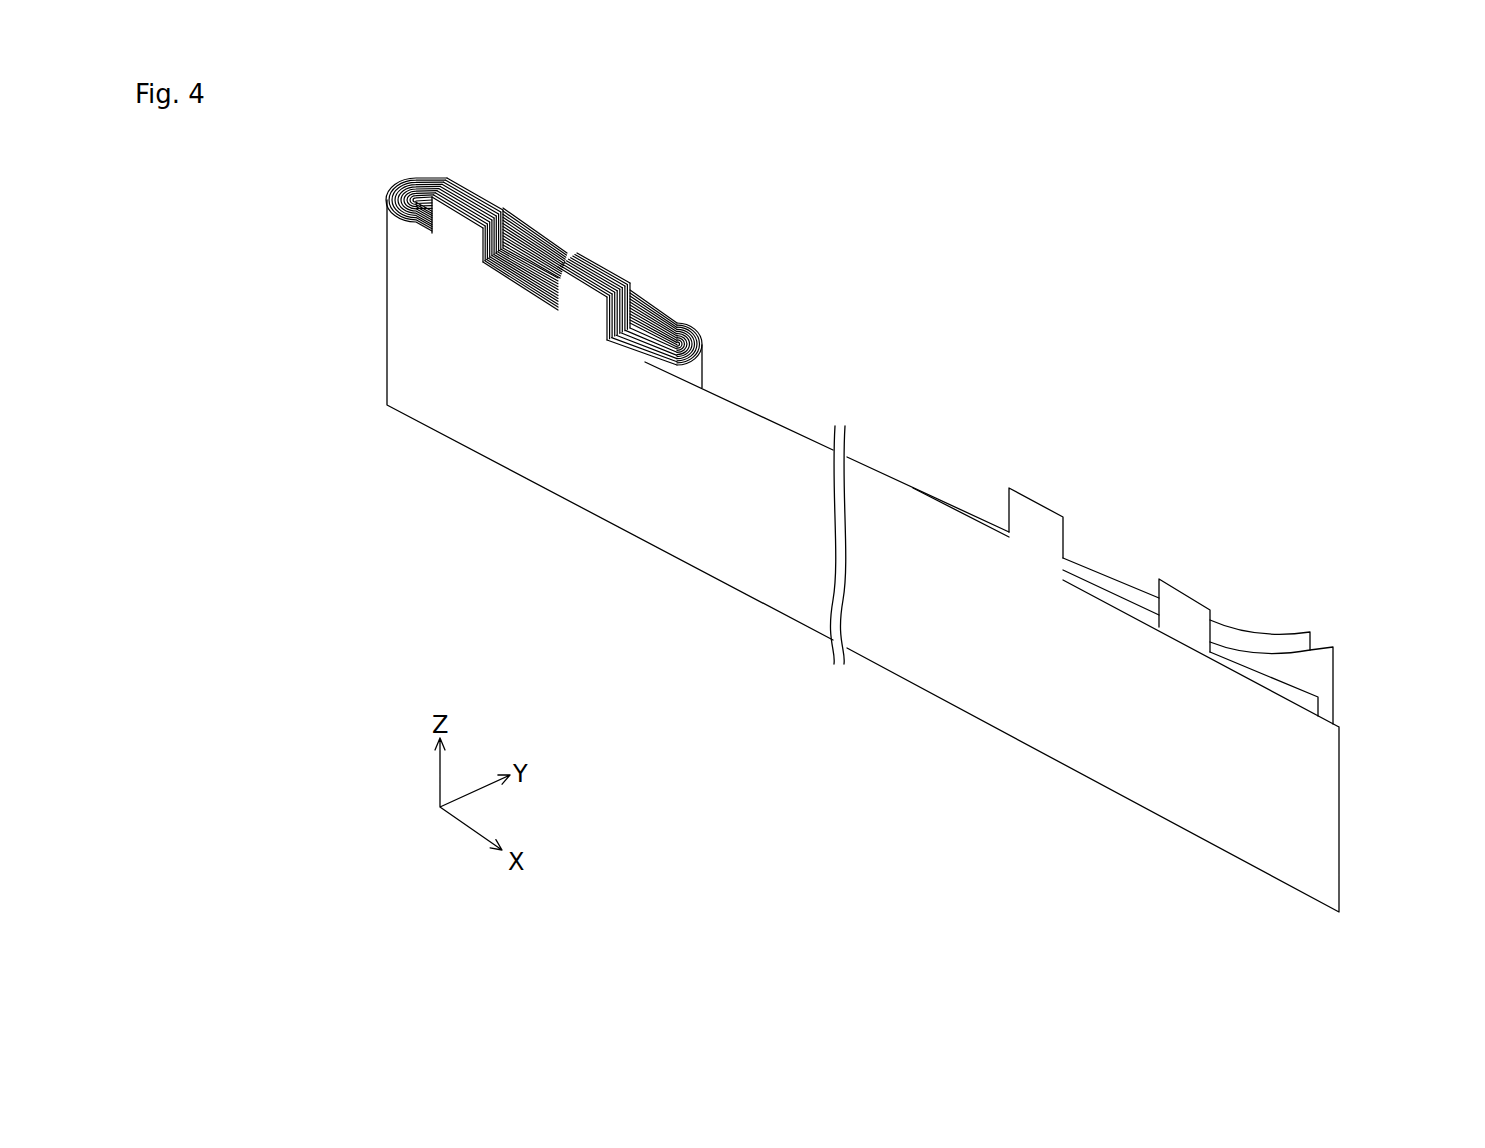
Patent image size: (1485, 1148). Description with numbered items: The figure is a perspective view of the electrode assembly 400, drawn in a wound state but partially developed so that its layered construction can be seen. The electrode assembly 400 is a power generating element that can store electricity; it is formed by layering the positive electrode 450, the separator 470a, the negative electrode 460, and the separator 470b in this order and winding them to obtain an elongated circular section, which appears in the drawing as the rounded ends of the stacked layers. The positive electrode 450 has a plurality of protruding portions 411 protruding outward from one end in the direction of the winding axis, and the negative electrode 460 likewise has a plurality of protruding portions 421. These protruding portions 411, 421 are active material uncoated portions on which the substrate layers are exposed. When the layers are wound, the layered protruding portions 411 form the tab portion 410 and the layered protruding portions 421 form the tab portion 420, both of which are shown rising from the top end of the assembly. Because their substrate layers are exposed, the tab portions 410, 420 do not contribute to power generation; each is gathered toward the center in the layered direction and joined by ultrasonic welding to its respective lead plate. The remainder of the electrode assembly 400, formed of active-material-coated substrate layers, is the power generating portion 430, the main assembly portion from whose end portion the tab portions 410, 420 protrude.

The electrode assembly 400 is at (1197, 182).
The tab portion 410 is at (489, 203).
The tab portion 420 is at (604, 268).
The protruding portions 411 is at (1040, 503).
The protruding portions 421 is at (1182, 588).
The power generating portion 430 is at (390, 283).
The positive electrode 450 is at (1107, 577).
The negative electrode 460 is at (1237, 663).
The separator 470a is at (1328, 643).
The separator 470b is at (1277, 693).